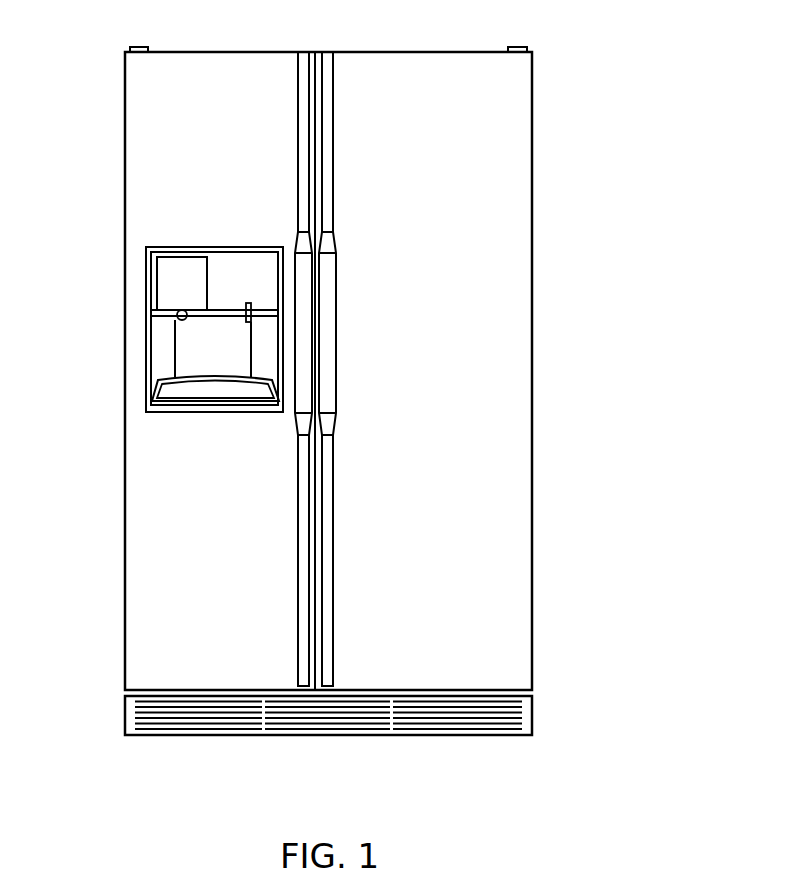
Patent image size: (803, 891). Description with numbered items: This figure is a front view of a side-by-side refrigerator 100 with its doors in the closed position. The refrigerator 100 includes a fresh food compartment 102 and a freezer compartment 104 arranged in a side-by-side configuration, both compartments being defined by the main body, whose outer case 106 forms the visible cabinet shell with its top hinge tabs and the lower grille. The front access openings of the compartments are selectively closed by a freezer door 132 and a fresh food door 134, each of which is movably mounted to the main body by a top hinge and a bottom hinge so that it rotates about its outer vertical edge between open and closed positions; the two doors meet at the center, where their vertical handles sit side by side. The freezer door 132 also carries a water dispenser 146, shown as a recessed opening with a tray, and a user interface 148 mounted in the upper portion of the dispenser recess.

The refrigerator 100 is at (584, 85).
The fresh food compartment 102 is at (511, 281).
The freezer compartment 104 is at (147, 123).
The outer case 106 is at (150, 603).
The freezer door 132 is at (238, 540).
The fresh food door 134 is at (435, 540).
The water dispenser 146 is at (176, 321).
The user interface 148 is at (178, 262).